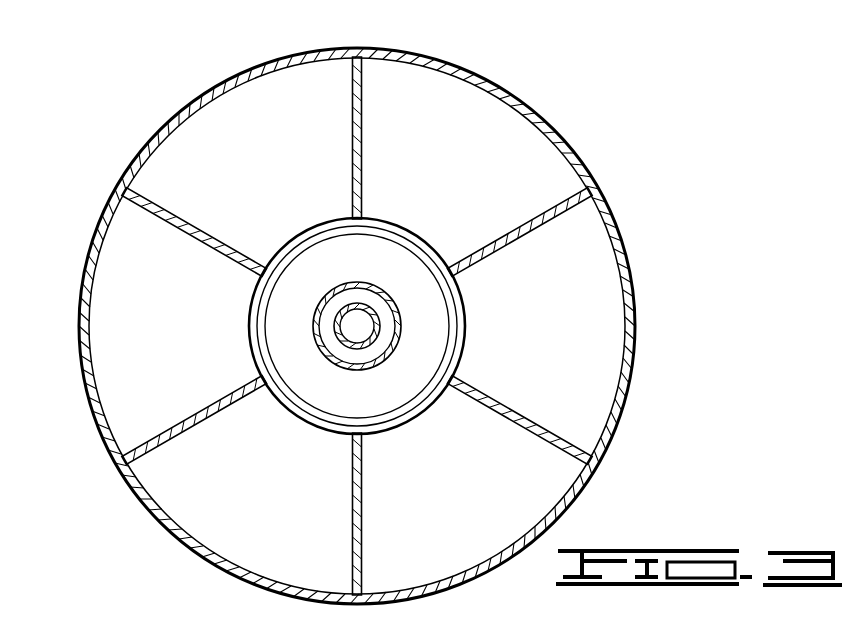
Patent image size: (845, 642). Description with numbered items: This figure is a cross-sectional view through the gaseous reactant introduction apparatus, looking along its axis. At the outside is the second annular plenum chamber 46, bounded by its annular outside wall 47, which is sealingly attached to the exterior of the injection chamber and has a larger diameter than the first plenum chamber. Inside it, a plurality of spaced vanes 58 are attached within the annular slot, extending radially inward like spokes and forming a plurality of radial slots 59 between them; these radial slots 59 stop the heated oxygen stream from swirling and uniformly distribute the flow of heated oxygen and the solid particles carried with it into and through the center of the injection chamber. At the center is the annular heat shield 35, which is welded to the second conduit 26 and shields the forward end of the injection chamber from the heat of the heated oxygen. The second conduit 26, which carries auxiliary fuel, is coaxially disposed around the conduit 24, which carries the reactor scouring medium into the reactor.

The second annular plenum chamber 46 is at (460, 60).
The annular outside wall 47 is at (566, 157).
The spaced vanes 58 is at (363, 149).
The radial slots 59 is at (293, 154).
The annular heat shield 35 is at (335, 283).
The second conduit 26 is at (332, 366).
The conduit 24 is at (371, 300).